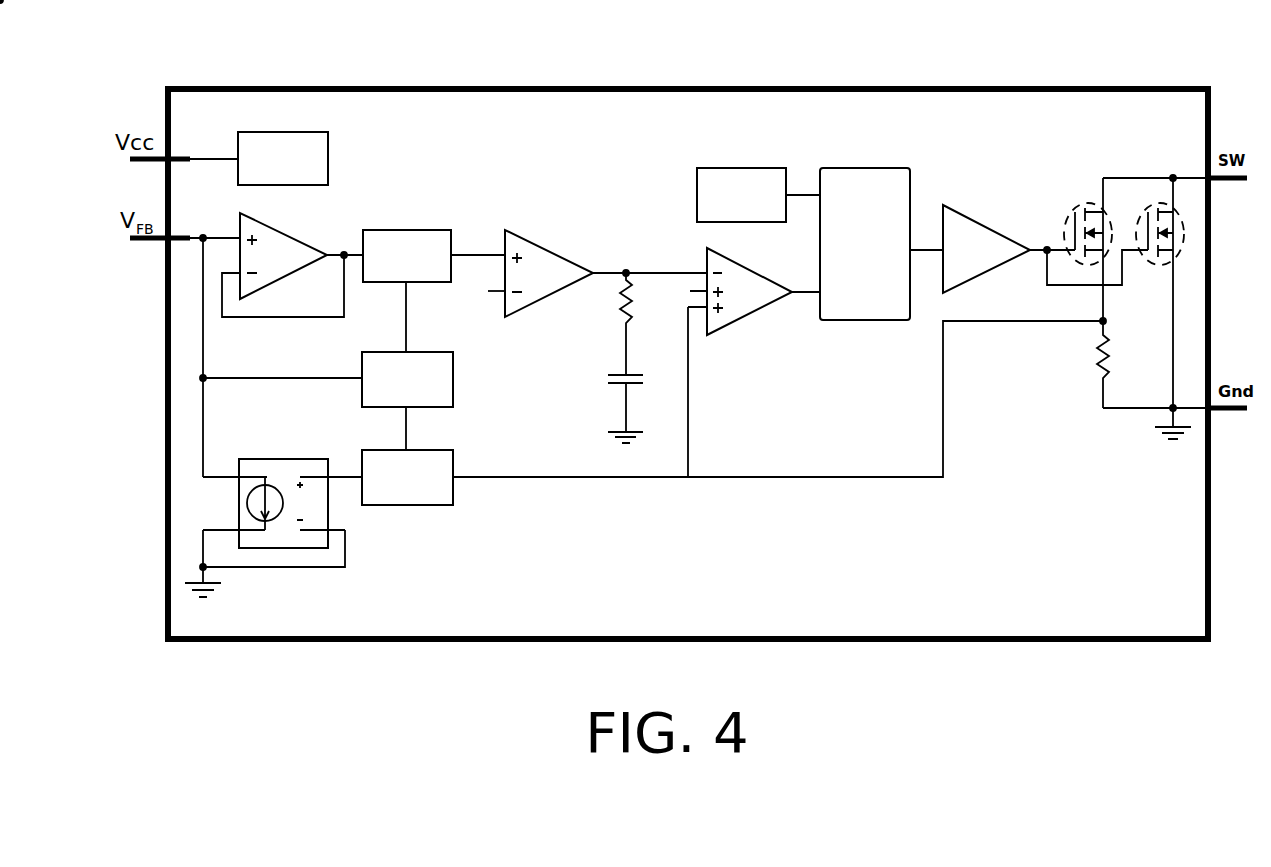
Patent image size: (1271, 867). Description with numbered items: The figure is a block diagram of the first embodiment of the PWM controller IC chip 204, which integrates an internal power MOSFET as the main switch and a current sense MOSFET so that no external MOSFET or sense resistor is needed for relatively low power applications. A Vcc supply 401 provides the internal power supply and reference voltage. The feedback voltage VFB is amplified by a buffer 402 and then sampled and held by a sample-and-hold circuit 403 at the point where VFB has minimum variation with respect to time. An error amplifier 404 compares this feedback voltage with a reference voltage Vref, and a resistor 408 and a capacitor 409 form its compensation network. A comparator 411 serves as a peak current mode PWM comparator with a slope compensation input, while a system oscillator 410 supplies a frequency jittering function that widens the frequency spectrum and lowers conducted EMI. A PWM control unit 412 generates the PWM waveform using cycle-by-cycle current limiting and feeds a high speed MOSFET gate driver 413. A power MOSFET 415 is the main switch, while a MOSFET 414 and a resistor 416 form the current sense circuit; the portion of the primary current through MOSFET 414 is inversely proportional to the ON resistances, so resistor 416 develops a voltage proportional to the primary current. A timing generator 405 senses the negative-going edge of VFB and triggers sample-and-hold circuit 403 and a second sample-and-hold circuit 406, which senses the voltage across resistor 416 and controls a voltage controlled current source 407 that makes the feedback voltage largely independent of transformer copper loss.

The PWM controller IC chip 204 is at (955, 56).
The Vcc supply 401 is at (273, 132).
The buffer 402 is at (289, 235).
The sample-and-hold circuit 403 is at (404, 230).
The error amplifier 404 is at (555, 247).
The timing generator 405 is at (429, 352).
The sample-and-hold circuit 406 is at (430, 450).
The voltage controlled current source 407 is at (275, 457).
The resistor 408 is at (620, 324).
The capacitor 409 is at (618, 385).
The system oscillator 410 is at (739, 166).
The comparator 411 is at (759, 272).
The PWM control unit 412 is at (845, 302).
The MOSFET gate driver 413 is at (994, 225).
The MOSFET 414 is at (1071, 202).
The power MOSFET 415 is at (1138, 215).
The resistor 416 is at (1102, 359).